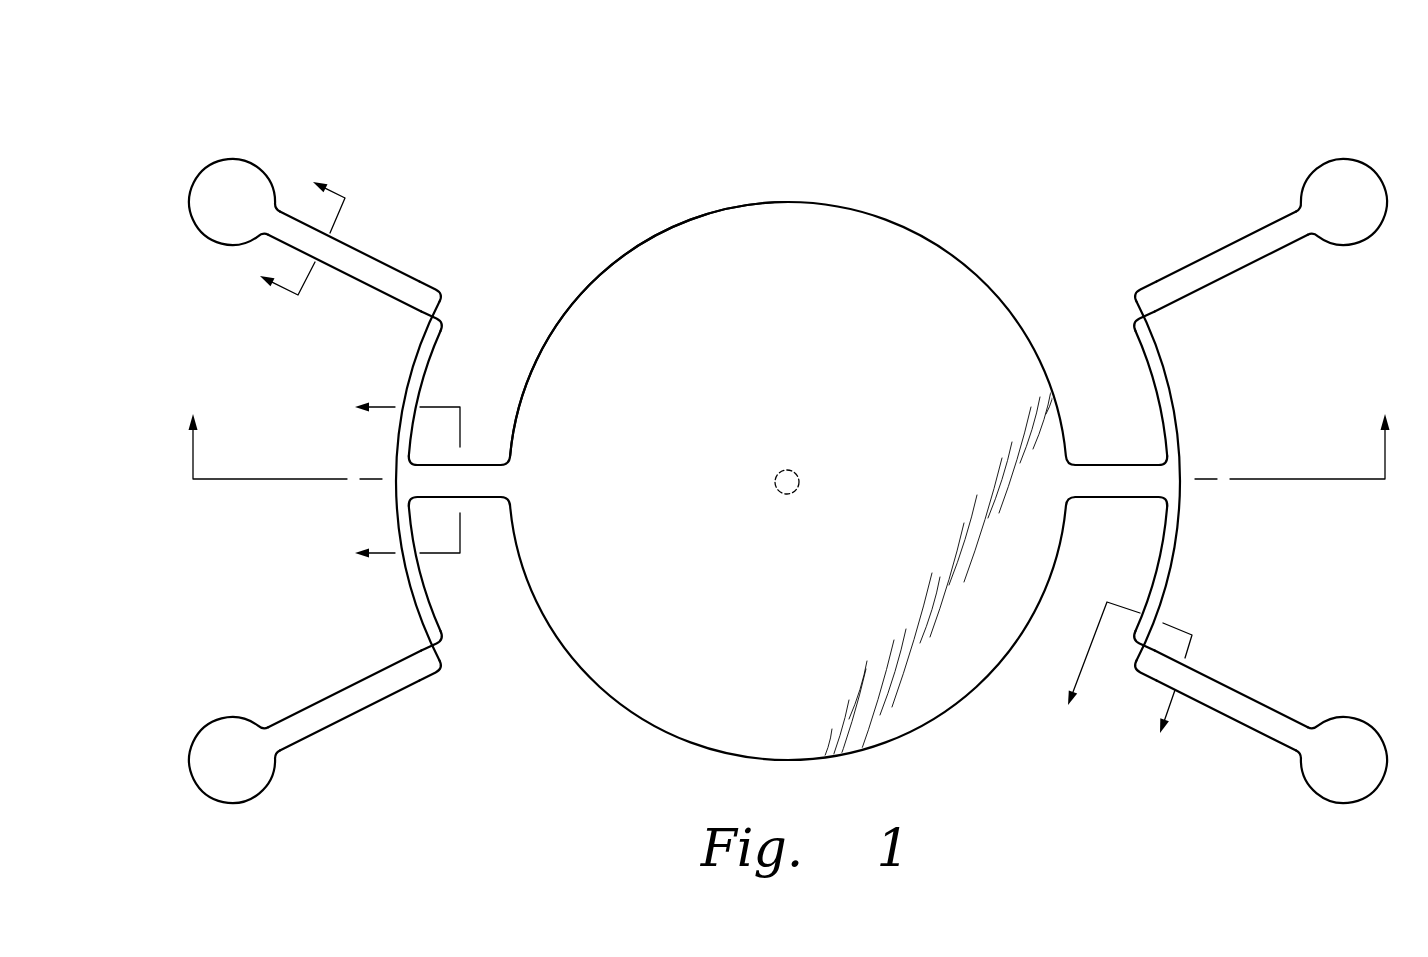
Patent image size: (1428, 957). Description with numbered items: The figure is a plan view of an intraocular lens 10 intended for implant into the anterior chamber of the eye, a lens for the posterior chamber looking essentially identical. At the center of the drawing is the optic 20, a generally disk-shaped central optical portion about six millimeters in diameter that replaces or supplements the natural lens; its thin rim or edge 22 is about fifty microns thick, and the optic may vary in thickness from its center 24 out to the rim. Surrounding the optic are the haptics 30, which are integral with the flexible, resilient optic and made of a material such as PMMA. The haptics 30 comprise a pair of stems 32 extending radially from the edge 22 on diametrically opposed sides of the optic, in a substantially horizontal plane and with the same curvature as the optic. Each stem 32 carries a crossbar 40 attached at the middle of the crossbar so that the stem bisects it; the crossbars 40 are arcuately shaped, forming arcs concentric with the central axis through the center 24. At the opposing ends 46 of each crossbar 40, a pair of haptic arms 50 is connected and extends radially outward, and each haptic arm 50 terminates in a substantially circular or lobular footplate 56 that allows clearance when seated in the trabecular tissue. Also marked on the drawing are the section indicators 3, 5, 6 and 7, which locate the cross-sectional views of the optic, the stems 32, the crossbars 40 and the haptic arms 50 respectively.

The intraocular lens 10 is at (606, 193).
The optic 20 is at (787, 265).
The rim or edge 22 is at (713, 212).
The center 24 is at (798, 471).
The haptics 30 is at (406, 266).
The stems 32 is at (490, 498).
The crossbars 40 is at (405, 592).
The opposing ends 46 is at (450, 300).
The haptic arms 50 is at (1222, 247).
The footplates 56 is at (216, 166).
The section line 3- 3 is at (789, 428).
The section line 5- 5 is at (394, 480).
The section line 6- 6 is at (1117, 684).
The section line 7- 7 is at (287, 224).